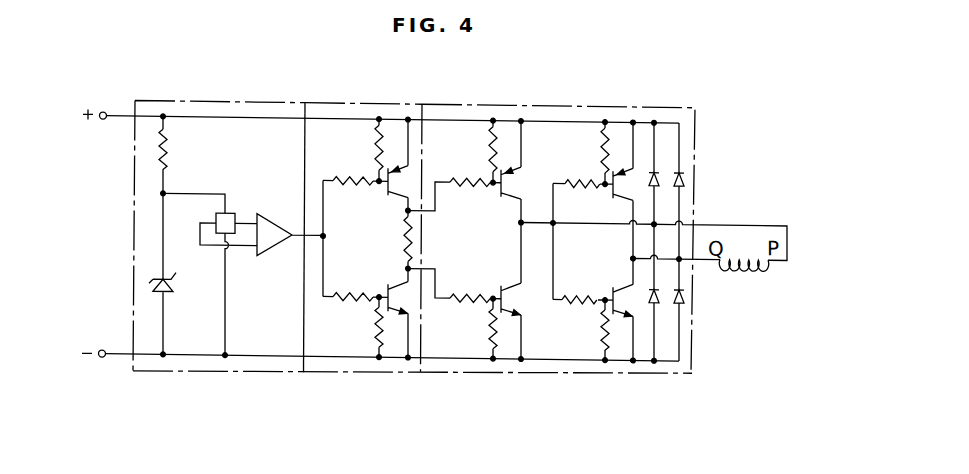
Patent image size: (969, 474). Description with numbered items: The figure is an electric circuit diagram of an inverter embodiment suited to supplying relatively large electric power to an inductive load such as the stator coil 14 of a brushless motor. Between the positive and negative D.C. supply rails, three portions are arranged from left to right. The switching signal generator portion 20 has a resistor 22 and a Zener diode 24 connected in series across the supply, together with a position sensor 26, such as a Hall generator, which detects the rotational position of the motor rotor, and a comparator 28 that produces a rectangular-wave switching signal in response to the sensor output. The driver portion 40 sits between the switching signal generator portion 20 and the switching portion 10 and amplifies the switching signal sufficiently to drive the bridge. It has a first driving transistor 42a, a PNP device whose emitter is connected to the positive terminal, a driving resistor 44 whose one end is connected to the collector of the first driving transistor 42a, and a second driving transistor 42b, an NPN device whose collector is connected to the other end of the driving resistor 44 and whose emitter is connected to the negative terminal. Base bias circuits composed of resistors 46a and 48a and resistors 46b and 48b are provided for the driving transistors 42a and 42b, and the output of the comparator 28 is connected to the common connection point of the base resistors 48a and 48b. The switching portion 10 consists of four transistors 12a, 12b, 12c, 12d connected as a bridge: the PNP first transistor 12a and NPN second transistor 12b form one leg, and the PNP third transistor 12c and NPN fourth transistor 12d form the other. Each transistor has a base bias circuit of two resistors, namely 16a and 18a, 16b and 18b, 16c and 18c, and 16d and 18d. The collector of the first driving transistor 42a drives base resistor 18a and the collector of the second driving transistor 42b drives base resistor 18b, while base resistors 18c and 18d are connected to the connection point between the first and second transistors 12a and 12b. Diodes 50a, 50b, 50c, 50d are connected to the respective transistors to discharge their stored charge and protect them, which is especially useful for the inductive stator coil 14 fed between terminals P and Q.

The switching portion 10 is at (589, 97).
The first transistor 12a is at (512, 177).
The second transistor 12b is at (512, 296).
The third transistor 12c is at (636, 171).
The fourth transistor 12d is at (627, 296).
The stator coil 14 is at (740, 265).
The resistor 16a is at (490, 145).
The resistor 16b is at (490, 326).
The resistor 16c is at (600, 139).
The resistor 16d is at (596, 324).
The base resistor 18a is at (475, 207).
The base resistor 18b is at (488, 288).
The base resistor 18c is at (583, 200).
The base resistor 18d is at (576, 286).
The switching signal generator portion 20 is at (262, 99).
The resistor 22 is at (170, 151).
The Zener diode 24 is at (176, 283).
The position sensor 26 is at (234, 212).
The comparator 28 is at (268, 246).
The driver portion 40 is at (387, 98).
The first driving transistor 42a is at (388, 189).
The second driving transistor 42b is at (388, 283).
The driving resistor 44 is at (403, 237).
The resistor 46a is at (376, 142).
The resistor 46b is at (376, 335).
The base resistor 48a is at (354, 168).
The base resistor 48b is at (340, 304).
The diode 50a is at (658, 168).
The diode 50b is at (660, 298).
The diode 50c is at (684, 176).
The diode 50d is at (684, 293).